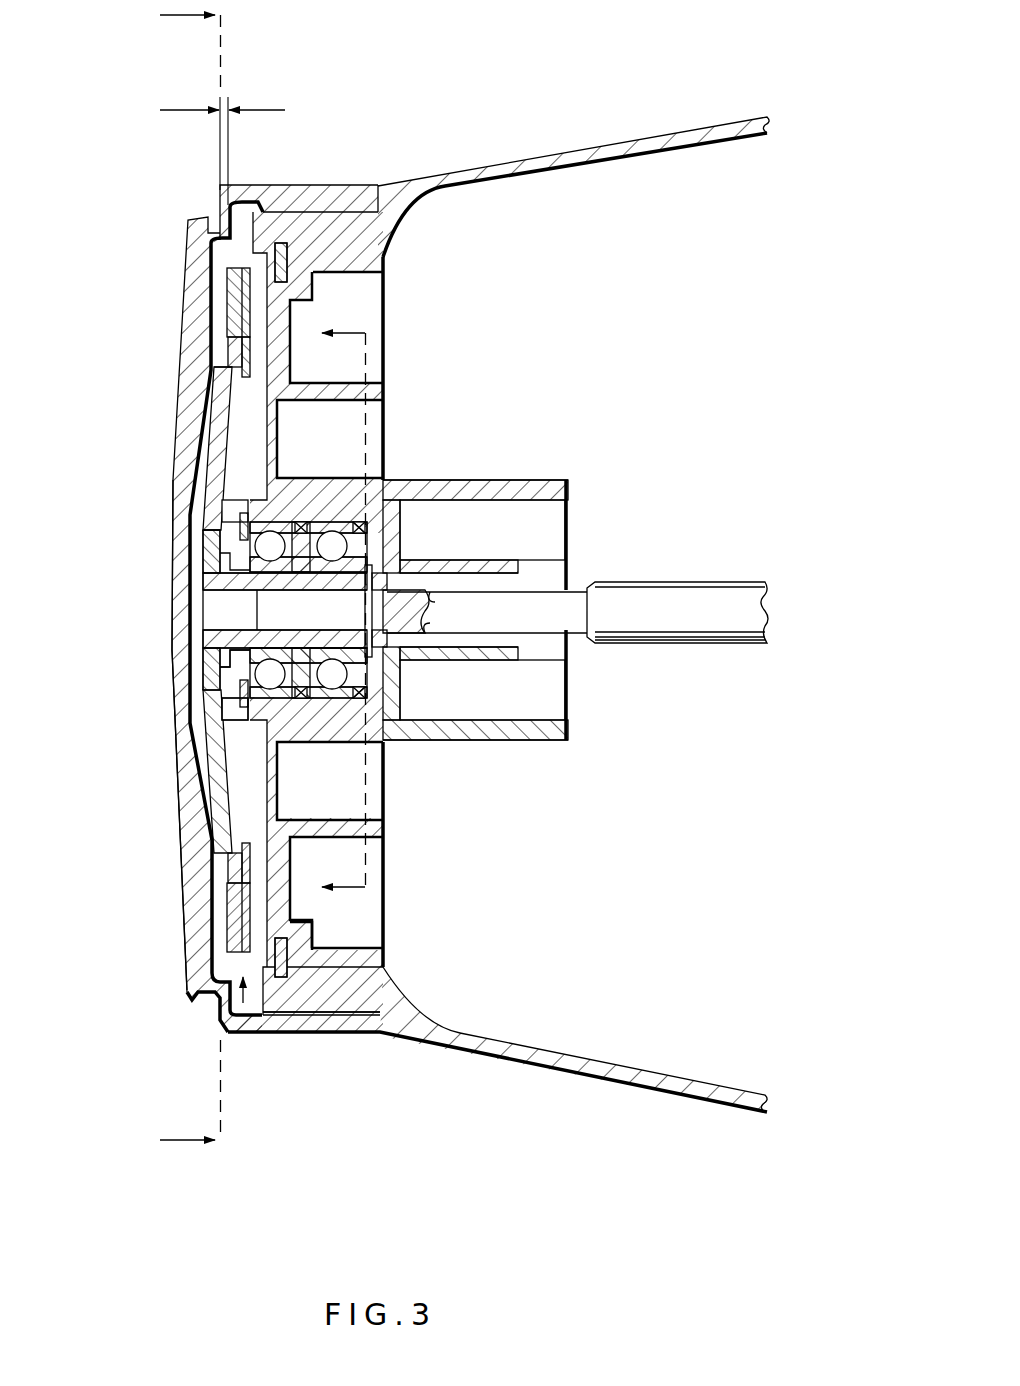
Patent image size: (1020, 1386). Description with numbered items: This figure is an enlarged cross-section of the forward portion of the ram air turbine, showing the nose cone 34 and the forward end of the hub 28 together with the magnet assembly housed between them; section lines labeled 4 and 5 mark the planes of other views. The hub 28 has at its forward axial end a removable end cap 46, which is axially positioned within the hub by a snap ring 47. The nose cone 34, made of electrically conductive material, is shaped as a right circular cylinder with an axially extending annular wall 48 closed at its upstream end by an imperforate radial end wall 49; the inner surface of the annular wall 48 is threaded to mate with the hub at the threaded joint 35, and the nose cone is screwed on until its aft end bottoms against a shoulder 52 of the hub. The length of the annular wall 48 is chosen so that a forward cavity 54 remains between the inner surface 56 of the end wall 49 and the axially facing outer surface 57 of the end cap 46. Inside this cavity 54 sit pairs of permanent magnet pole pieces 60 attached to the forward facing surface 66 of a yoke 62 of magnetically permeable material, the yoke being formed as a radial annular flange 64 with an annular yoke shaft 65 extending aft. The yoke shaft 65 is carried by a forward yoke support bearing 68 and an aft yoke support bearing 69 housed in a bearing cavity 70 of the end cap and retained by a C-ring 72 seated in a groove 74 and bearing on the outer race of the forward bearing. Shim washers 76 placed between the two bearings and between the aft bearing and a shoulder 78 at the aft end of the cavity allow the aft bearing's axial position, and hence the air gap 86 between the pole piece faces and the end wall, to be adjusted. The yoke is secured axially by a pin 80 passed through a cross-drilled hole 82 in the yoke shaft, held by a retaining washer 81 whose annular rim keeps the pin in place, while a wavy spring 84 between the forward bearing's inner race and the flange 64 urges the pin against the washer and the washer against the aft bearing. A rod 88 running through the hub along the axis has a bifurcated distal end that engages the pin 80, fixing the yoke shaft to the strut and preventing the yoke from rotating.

The hub 28 is at (562, 132).
The nose cone 34 is at (178, 875).
The threaded joint 35 is at (405, 988).
The end cap 46 is at (383, 820).
The snap ring 47 is at (278, 985).
The annular wall 48 is at (320, 185).
The end wall 49 is at (190, 238).
The shoulder 52 is at (352, 1025).
The forward cavity 54 is at (243, 1003).
The inner surface of end wall 56 is at (227, 905).
The axially facing outer surface of end cap 57 is at (295, 918).
The permanent magnet pole pieces 60 is at (227, 293).
The yoke 62 is at (178, 477).
The annular flange 64 is at (178, 428).
The yoke shaft 65 is at (203, 632).
The forward facing surface of flange 66 is at (190, 353).
The forward yoke support bearing 68 is at (207, 492).
The aft yoke support bearing 69 is at (353, 530).
The bearing cavity 70 is at (300, 540).
The C-ring 72 is at (226, 693).
The groove 74 is at (243, 740).
The shim washers 76 is at (300, 700).
The shoulder 78 is at (355, 697).
The pin 80 is at (440, 634).
The retaining washer 81 is at (380, 540).
The cross-drilled hole 82 is at (375, 640).
The wavy spring 84 is at (222, 523).
The air gap 86 is at (238, 86).
The rod 88 is at (687, 643).
The section line 4- 4 is at (176, 581).
The section line 5- 5 is at (327, 613).